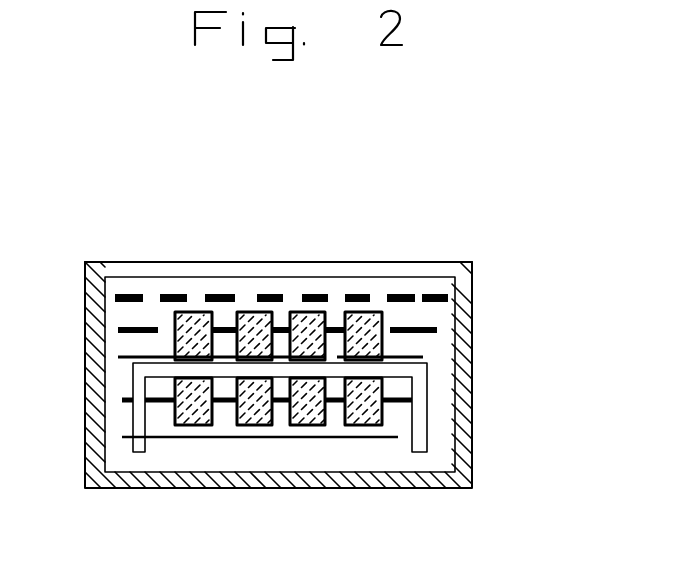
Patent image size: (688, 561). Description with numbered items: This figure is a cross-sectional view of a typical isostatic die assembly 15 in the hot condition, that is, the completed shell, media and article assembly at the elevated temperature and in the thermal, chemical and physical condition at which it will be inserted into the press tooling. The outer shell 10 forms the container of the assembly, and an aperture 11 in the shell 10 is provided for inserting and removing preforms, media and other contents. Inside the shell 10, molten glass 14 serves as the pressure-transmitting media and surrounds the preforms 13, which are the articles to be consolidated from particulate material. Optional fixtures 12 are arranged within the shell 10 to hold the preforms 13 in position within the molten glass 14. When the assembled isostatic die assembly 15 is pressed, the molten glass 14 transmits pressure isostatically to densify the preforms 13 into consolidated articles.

The shell 10 is at (473, 342).
The aperture 11 is at (398, 230).
The fixture 12 is at (427, 430).
The preform 13 is at (372, 313).
The molten glass 14 is at (128, 343).
The assembled isostatic die assembly 15 is at (132, 220).